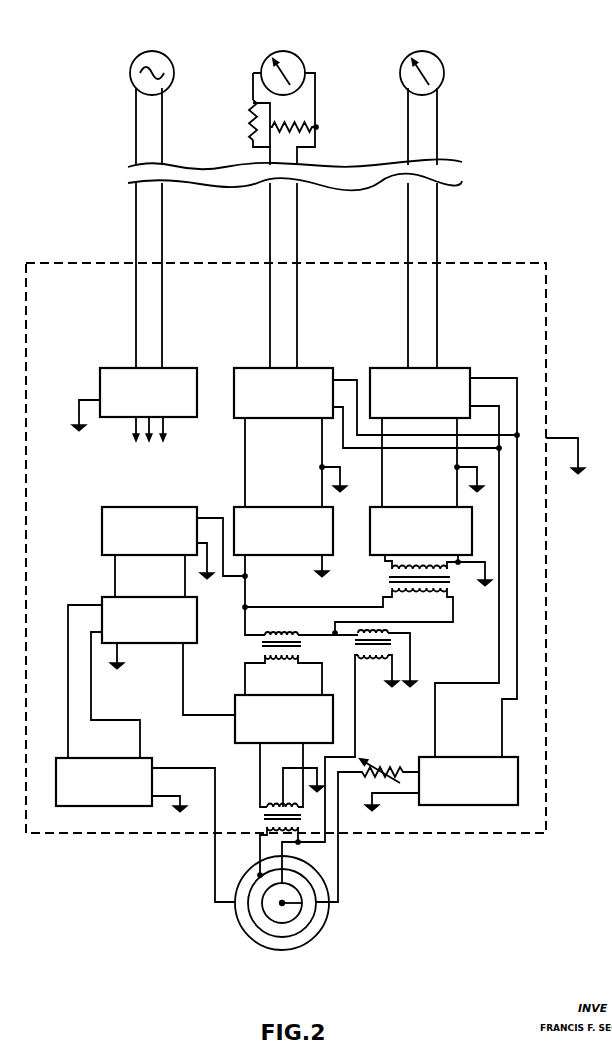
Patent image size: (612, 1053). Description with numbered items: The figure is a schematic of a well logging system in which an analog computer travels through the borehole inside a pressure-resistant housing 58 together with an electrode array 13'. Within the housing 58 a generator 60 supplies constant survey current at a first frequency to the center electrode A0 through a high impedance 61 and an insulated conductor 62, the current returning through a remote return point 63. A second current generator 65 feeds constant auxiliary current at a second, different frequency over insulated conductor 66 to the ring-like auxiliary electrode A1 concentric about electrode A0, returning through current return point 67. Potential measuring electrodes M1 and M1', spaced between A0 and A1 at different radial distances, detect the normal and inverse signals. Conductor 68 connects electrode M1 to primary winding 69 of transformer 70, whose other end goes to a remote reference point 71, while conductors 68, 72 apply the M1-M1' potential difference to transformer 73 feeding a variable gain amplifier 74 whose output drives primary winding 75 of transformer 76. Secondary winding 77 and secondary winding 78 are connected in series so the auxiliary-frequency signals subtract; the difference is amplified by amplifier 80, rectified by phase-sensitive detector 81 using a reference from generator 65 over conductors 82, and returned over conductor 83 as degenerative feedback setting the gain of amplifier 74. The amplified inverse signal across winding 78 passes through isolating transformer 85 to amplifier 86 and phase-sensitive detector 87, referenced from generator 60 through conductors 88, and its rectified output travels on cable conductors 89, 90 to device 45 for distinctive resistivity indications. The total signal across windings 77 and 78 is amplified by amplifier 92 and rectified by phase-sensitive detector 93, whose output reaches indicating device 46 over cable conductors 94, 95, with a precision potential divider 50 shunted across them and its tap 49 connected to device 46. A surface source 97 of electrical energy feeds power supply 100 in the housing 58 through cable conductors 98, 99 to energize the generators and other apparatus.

The source of electrical energy 97 is at (132, 67).
The indicating device 46 is at (300, 63).
The device for providing distinctive indications 45 is at (440, 63).
The tap 49 is at (253, 105).
The precision potential divider 50 is at (250, 125).
The cable conductor 98 is at (136, 252).
The cable conductor 99 is at (163, 252).
The cable conductor 94 is at (270, 246).
The cable conductor 95 is at (298, 246).
The cable conductor 89 is at (408, 250).
The cable conductor 90 is at (438, 250).
The power supply 100 is at (127, 367).
The phase-sensitive detector 93 is at (262, 367).
The phase-sensitive detector 87 is at (396, 367).
The conductors 88 is at (500, 583).
The amplifier 80 is at (161, 504).
The amplifier 92 is at (312, 504).
The amplifier 86 is at (438, 504).
The isolating transformer 85 is at (388, 578).
The phase-sensitive detector 81 is at (198, 631).
The conductors 82 is at (91, 696).
The conductor 83 is at (183, 701).
The secondary winding 78 is at (284, 633).
The transformer 76 is at (262, 644).
The primary winding 75 is at (287, 661).
The secondary winding 77 is at (356, 641).
The transformer 70 is at (392, 651).
The primary winding 69 is at (371, 662).
The remote reference point 71 is at (391, 689).
The conductor 68 is at (355, 703).
The variable gain amplifier 74 is at (242, 694).
The transformer 73 is at (264, 817).
The conductor 72 is at (260, 852).
The second current generator 65 is at (126, 757).
The insulated conductor 66 is at (172, 767).
The current return point 67 is at (183, 809).
The generator 60 is at (490, 757).
The high impedance 61 is at (379, 765).
The return point 63 is at (376, 804).
The insulated conductor 62 is at (341, 848).
The pressure-resistant housing 58 is at (547, 672).
The electrode array 13' is at (282, 919).
The potential measuring electrode M1 is at (311, 911).
The potential measuring electrode M1' is at (299, 919).
The center electrode A0 is at (282, 903).
The auxiliary electrode A1 is at (248, 935).